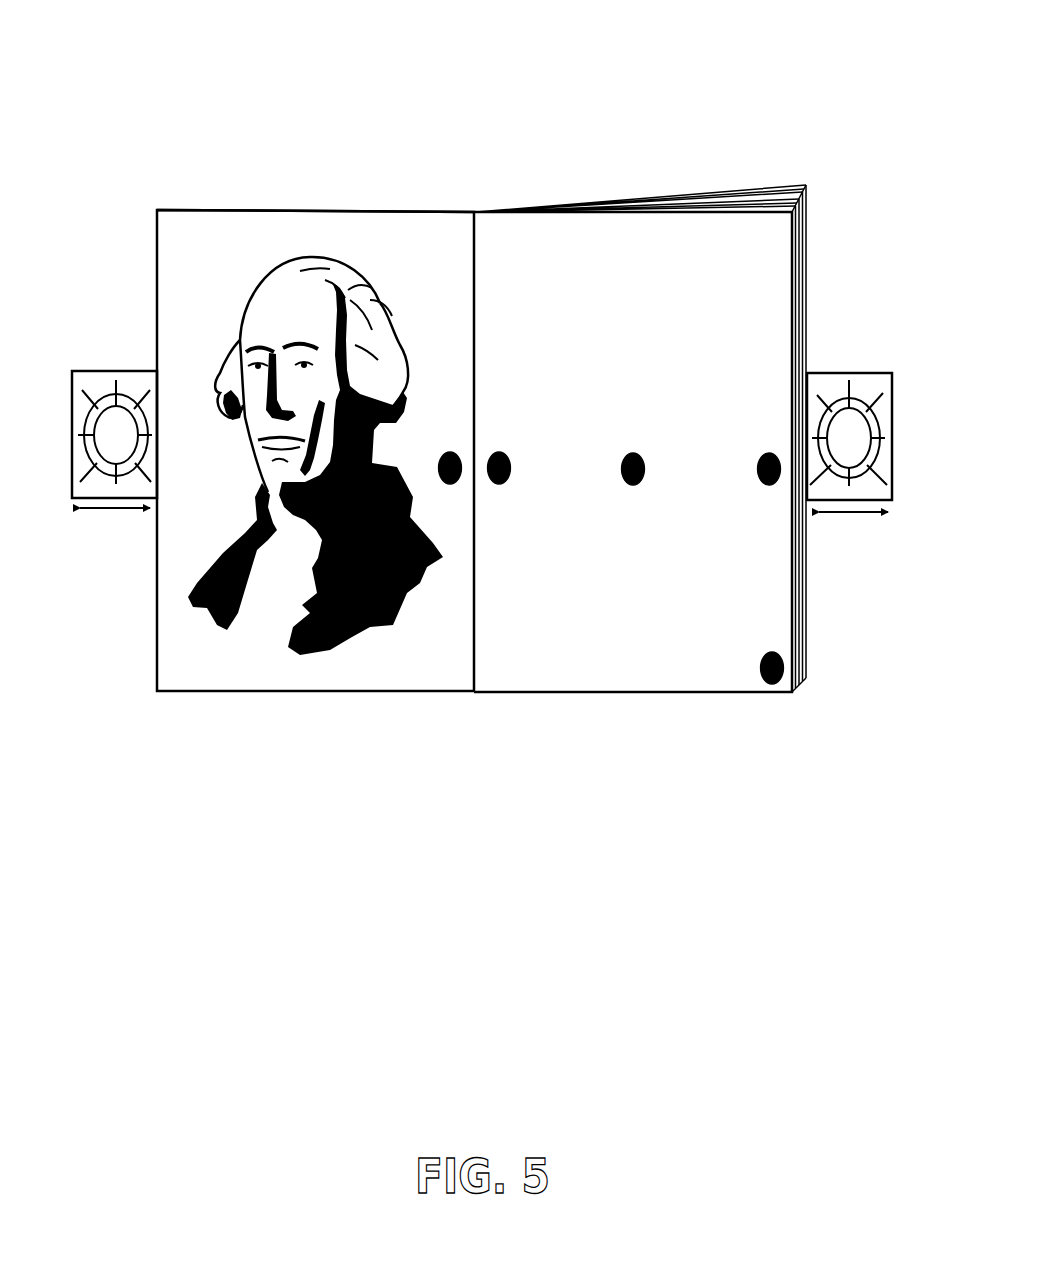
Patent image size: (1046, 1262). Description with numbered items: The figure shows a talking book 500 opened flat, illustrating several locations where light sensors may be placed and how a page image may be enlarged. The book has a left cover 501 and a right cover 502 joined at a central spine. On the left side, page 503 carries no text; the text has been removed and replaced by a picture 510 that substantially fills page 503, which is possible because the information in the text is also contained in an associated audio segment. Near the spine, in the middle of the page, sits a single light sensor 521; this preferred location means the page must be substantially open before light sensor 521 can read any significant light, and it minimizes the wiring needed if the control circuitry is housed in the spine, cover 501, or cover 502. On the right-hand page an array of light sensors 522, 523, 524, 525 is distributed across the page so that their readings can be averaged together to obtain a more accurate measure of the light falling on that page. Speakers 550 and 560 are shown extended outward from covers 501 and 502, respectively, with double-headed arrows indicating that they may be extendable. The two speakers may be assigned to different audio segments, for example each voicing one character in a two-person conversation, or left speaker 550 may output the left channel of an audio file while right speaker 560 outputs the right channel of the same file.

The talking book 500 is at (250, 32).
The cover 501 is at (183, 209).
The cover 502 is at (806, 185).
The page 503 is at (333, 232).
The picture 510 is at (315, 657).
The light sensor 521 is at (452, 452).
The light sensor 522 is at (503, 455).
The light sensor 523 is at (640, 459).
The light sensor 524 is at (763, 461).
The light sensor 525 is at (771, 654).
The speaker 550 is at (113, 370).
The speaker 560 is at (882, 373).